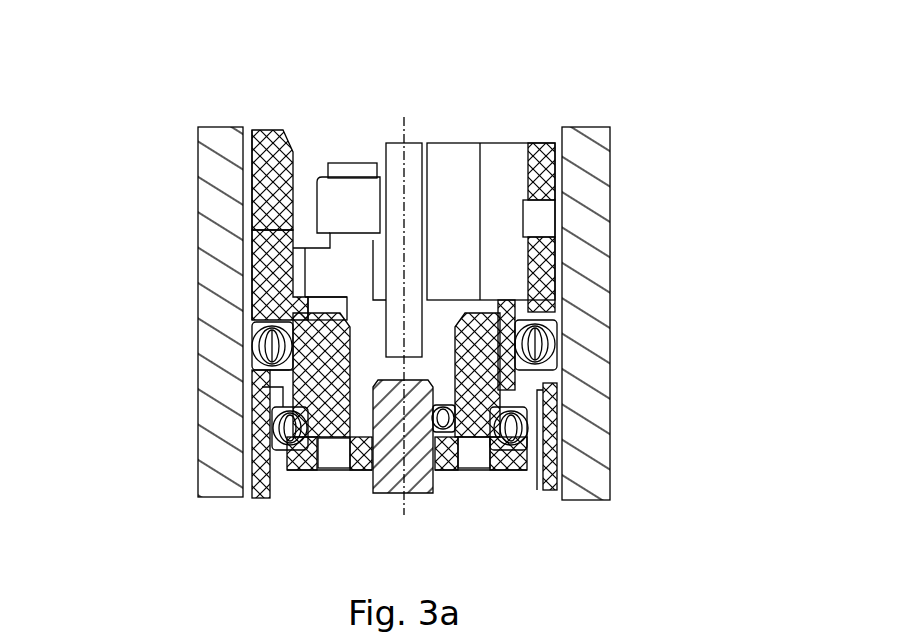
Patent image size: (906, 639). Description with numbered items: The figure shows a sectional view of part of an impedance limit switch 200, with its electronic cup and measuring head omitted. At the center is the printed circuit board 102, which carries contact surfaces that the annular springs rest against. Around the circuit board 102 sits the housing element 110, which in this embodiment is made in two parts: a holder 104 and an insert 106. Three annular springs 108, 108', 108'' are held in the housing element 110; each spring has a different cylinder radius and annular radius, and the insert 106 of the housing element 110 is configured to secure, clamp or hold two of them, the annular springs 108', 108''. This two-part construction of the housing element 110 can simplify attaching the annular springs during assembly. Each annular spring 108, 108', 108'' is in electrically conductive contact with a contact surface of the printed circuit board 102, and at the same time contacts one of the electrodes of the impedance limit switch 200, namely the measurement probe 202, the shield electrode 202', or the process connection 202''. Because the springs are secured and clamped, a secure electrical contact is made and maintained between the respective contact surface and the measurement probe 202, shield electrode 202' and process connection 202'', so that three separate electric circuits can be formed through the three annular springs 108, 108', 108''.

The impedance limit switch 200 is at (206, 95).
The printed circuit board 102 is at (410, 171).
The holder 104 is at (266, 233).
The insert 106 is at (323, 338).
The housing element 110 is at (269, 162).
The annular spring 108 is at (619, 336).
The annular spring 108' is at (526, 479).
The annular spring 108'' is at (626, 436).
The measurement probe 202 is at (380, 479).
The shield electrode 202' is at (176, 461).
The process connection 202'' is at (182, 333).